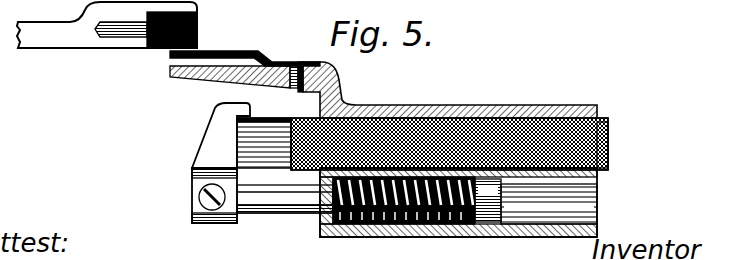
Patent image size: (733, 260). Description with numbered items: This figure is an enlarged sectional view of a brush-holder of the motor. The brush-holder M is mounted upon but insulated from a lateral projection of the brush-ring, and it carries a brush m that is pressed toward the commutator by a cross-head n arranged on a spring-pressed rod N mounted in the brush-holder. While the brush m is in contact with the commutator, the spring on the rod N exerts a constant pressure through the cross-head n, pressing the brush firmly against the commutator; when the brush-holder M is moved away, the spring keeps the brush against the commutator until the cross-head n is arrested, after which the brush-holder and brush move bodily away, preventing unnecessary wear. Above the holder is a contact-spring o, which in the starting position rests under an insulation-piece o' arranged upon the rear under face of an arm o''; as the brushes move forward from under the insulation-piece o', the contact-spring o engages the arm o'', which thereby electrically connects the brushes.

The arm o'' is at (107, 39).
The insulation-piece o' is at (197, 24).
The contact-spring o is at (245, 43).
The brush-holder M is at (450, 104).
The brush m is at (608, 146).
The cross-head n is at (193, 147).
The spring-pressed rod N is at (276, 211).